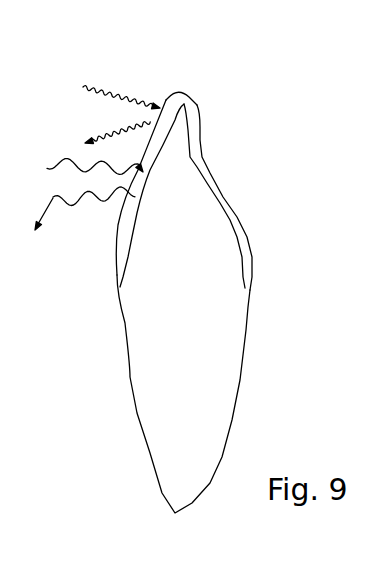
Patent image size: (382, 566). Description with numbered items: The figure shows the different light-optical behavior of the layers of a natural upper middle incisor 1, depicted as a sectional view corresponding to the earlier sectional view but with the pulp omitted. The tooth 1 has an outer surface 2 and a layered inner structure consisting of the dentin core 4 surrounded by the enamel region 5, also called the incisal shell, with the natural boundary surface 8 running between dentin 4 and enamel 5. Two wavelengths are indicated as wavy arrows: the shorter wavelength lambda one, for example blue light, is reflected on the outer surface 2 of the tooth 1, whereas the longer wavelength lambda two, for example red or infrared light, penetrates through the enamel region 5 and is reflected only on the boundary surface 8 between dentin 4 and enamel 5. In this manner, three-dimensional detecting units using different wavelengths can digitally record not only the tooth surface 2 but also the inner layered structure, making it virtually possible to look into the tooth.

The upper middle incisor 1 is at (256, 164).
The outer surface 2 is at (166, 98).
The dentin 4 is at (215, 258).
The enamel region 5 is at (202, 157).
The boundary surface 8 is at (135, 220).